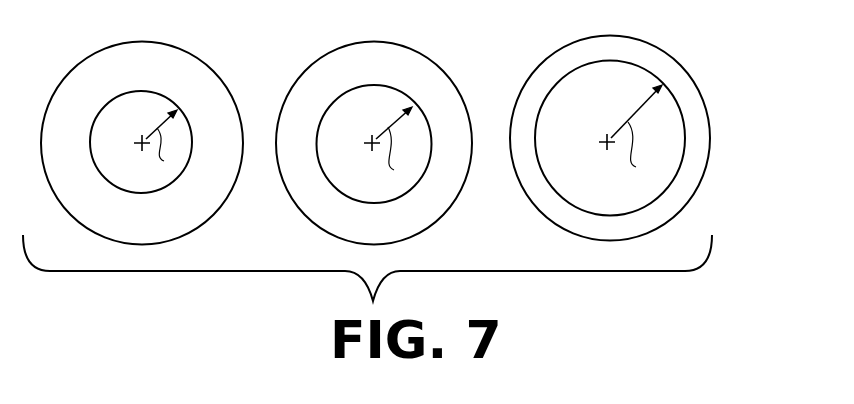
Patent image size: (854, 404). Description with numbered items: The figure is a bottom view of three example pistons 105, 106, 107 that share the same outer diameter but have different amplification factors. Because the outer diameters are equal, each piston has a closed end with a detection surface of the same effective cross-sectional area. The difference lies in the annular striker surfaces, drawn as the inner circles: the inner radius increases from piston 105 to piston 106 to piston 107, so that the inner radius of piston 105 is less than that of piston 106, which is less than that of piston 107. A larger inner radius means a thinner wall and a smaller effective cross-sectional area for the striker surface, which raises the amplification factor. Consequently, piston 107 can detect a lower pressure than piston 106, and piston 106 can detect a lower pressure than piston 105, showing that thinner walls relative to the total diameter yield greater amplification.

The piston 105 is at (212, 63).
The piston 106 is at (442, 70).
The piston 107 is at (677, 61).